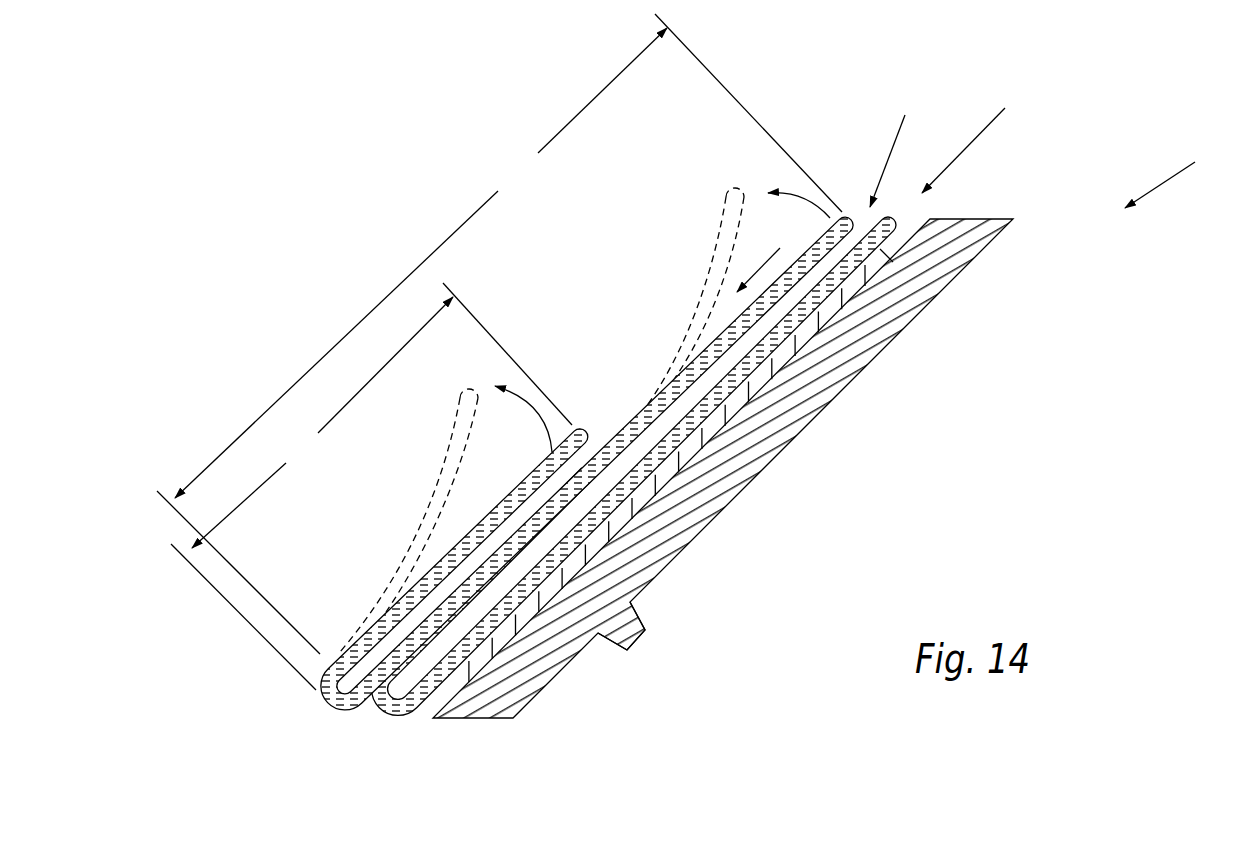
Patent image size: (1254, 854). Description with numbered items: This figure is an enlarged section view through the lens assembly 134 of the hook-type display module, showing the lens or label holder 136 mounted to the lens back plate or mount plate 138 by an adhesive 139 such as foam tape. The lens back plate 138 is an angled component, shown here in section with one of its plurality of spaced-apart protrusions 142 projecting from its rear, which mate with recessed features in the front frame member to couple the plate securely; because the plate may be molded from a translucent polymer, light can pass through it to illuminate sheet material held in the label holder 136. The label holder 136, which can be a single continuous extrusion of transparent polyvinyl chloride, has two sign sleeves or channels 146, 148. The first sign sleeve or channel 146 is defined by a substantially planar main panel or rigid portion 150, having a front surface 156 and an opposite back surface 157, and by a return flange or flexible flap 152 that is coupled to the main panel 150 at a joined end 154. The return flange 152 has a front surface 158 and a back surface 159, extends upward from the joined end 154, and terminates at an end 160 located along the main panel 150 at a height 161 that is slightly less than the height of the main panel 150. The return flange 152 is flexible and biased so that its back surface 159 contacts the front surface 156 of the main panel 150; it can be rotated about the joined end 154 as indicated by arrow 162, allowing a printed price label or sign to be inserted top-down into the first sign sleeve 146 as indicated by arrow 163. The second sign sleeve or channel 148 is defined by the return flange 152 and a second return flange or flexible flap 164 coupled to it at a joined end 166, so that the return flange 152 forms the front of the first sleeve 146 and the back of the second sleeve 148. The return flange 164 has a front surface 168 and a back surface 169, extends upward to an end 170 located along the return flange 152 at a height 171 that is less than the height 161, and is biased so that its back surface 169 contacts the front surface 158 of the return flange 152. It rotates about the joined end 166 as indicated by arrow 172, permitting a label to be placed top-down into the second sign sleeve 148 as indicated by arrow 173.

The lens assembly 134 is at (1183, 180).
The lens or label holder 136 is at (316, 700).
The lens back plate or mount plate 138 is at (800, 395).
The adhesive 139 is at (548, 590).
The protrusions 142 is at (640, 623).
The first sign sleeve or channel 146 is at (908, 156).
The second sign sleeve or channel 148 is at (603, 427).
The main panel or rigid portion 150 is at (677, 455).
The return flange or flexible flap 152 is at (602, 468).
The joined end 154 is at (393, 716).
The front surface 156 is at (710, 400).
The back surface 157 is at (822, 312).
The front surface 158 is at (650, 403).
The back surface 159 is at (548, 532).
The end 160 is at (846, 217).
The height 161 is at (499, 334).
The arrow 162 is at (845, 219).
The arrow 163 is at (968, 145).
The return flange or flexible flap 164 is at (425, 590).
The joined end 166 is at (330, 709).
The front surface 168 is at (370, 627).
The back surface 169 is at (405, 618).
The end 170 is at (583, 433).
The height 171 is at (371, 486).
The arrow 172 is at (494, 380).
The arrow 173 is at (758, 270).